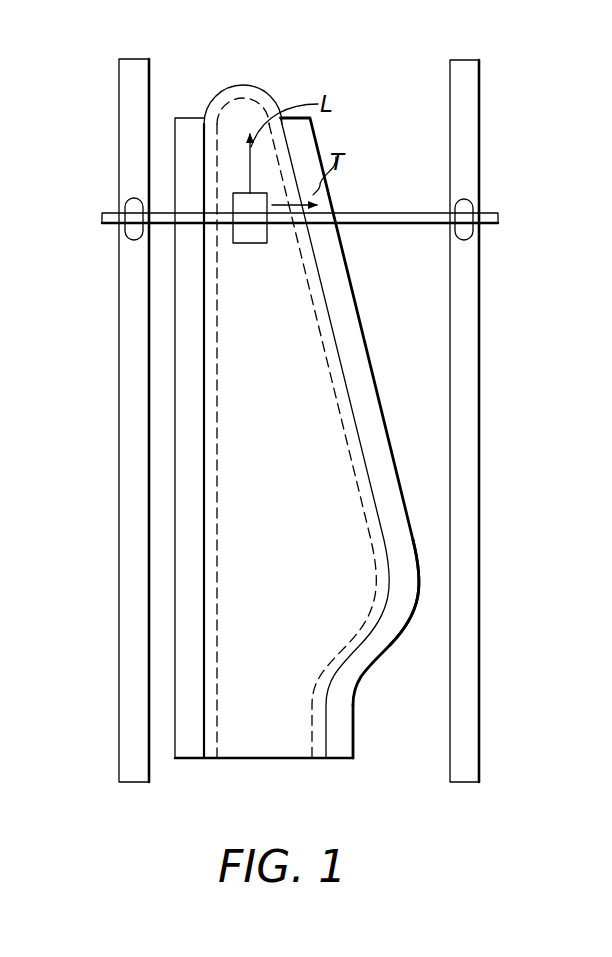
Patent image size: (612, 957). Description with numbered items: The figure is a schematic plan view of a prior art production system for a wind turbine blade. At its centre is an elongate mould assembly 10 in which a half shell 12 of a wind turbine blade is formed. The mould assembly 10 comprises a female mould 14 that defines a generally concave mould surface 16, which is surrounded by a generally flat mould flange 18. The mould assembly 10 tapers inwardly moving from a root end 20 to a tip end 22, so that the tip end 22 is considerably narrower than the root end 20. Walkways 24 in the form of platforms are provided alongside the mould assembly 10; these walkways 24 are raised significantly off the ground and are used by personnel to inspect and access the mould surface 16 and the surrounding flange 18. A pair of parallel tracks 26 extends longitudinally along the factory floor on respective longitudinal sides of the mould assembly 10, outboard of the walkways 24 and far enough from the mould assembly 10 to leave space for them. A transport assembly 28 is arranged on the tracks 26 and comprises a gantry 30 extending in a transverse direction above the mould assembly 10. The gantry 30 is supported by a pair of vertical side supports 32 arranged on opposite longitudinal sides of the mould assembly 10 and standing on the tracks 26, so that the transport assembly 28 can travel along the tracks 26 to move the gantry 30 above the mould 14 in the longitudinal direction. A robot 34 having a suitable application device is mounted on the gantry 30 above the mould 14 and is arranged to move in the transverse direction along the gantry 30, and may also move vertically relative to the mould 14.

The mould assembly 10 is at (372, 164).
The half shell 12 is at (237, 530).
The female mould 14 is at (362, 447).
The mould surface 16 is at (319, 395).
The mould flange 18 is at (371, 523).
The root end 20 is at (268, 759).
The tip end 22 is at (245, 85).
The walkways 24 is at (186, 334).
The tracks 26 is at (128, 726).
The transport assembly 28 is at (99, 219).
The gantry 30 is at (412, 226).
The side supports 32 is at (130, 200).
The robot 34 is at (253, 245).